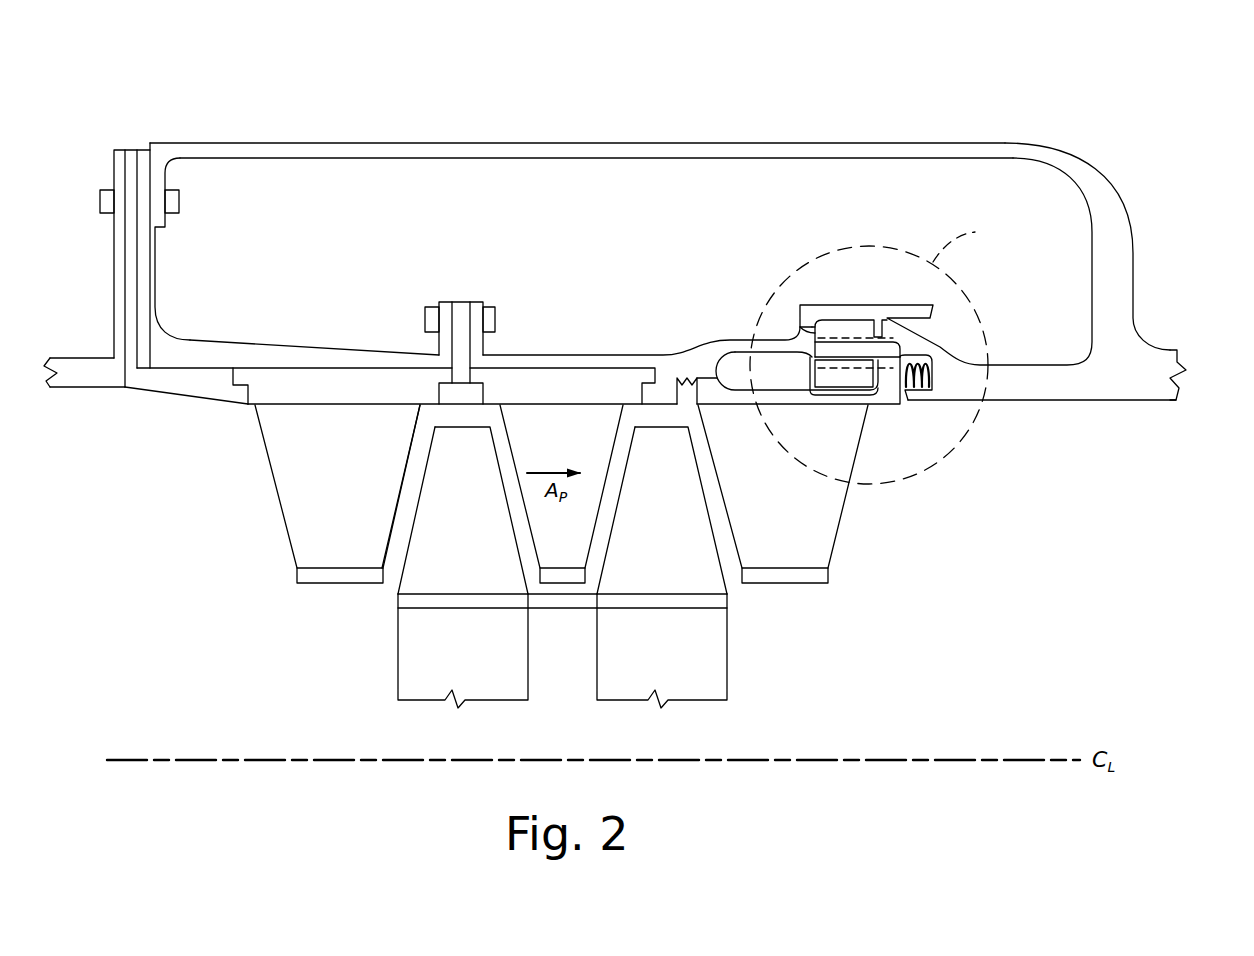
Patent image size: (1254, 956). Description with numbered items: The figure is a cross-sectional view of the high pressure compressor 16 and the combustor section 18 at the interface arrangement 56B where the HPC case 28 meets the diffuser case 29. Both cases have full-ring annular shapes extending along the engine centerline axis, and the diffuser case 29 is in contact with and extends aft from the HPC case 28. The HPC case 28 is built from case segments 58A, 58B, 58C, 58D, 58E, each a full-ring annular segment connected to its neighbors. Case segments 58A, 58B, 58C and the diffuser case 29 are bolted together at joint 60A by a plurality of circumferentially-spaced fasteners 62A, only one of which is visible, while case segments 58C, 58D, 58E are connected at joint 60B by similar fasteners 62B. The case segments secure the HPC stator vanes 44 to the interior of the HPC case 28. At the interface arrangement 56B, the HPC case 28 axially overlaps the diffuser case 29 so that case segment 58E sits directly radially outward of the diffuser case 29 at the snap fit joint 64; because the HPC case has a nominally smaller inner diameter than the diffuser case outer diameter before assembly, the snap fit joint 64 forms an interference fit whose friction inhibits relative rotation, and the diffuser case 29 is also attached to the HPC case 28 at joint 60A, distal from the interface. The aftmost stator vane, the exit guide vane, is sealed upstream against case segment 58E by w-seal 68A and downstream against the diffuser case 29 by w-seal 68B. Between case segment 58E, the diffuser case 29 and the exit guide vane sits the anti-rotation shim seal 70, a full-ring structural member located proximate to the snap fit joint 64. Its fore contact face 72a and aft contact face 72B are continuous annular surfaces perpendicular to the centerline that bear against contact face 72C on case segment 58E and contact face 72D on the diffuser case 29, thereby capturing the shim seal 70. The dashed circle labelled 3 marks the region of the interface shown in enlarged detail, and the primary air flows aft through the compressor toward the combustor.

The high pressure compressor 16 is at (162, 450).
The combustor section 18 is at (1153, 212).
The HPC case 28 is at (290, 338).
The diffuser case 29 is at (927, 126).
The detail view region 3 is at (874, 350).
The HPC stator vanes 44 is at (839, 564).
The interface arrangement 56B is at (866, 319).
The case segment 58A is at (78, 356).
The case segment 58B is at (160, 393).
The case segment 58C is at (372, 347).
The case segment 58D is at (460, 302).
The case segment 58E is at (663, 352).
The joint 60A is at (164, 236).
The joint 60B is at (522, 316).
The fasteners 62A is at (181, 203).
The fasteners 62B is at (496, 320).
The snap fit joint 64 is at (836, 495).
The w-seal 68A is at (689, 385).
The w-seal 68B is at (934, 373).
The anti-rotation shim seal 70 is at (849, 317).
The contact face 72a is at (812, 362).
The contact face 72B is at (896, 355).
The contact face 72C is at (815, 336).
The contact face 72D is at (886, 398).